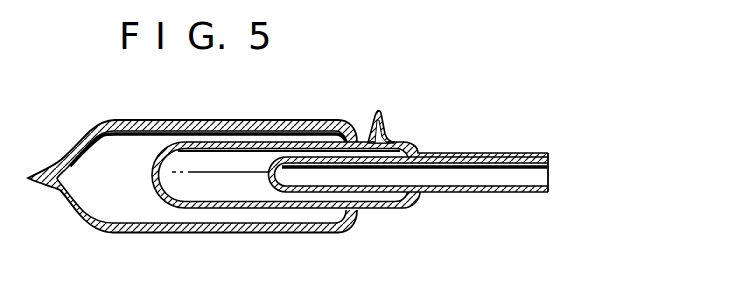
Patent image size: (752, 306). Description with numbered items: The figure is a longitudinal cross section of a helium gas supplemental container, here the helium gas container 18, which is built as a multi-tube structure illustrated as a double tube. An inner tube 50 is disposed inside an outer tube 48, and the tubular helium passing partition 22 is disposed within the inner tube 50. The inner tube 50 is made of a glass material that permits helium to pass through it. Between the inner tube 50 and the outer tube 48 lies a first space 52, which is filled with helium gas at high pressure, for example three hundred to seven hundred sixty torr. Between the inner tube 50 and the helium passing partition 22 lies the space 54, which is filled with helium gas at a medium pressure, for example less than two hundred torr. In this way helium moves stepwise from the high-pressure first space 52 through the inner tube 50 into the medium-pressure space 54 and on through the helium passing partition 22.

The helium gas container 18 is at (183, 123).
The helium passing partition 22 is at (364, 143).
The outer tube 48 is at (128, 229).
The inner tube 50 is at (282, 143).
The first space 52 is at (128, 145).
The space 54 is at (223, 160).